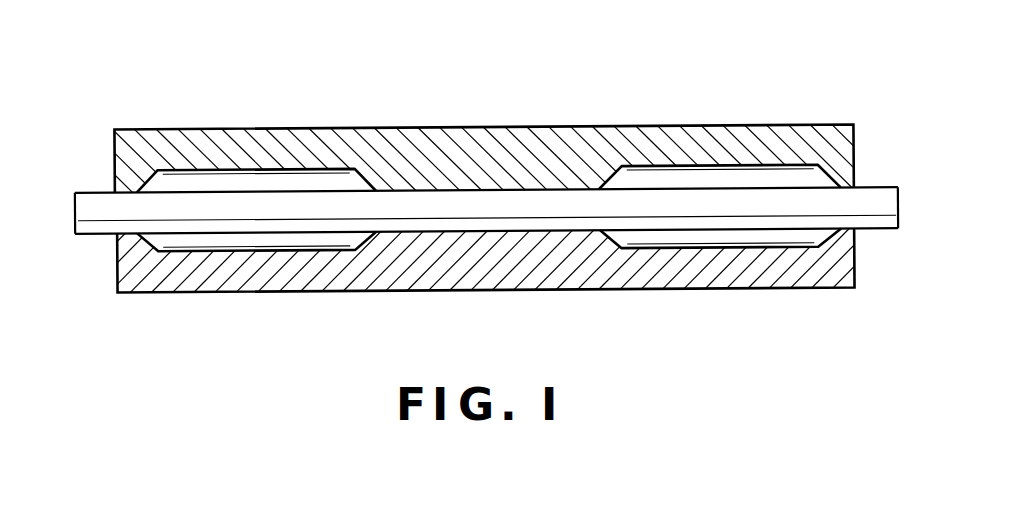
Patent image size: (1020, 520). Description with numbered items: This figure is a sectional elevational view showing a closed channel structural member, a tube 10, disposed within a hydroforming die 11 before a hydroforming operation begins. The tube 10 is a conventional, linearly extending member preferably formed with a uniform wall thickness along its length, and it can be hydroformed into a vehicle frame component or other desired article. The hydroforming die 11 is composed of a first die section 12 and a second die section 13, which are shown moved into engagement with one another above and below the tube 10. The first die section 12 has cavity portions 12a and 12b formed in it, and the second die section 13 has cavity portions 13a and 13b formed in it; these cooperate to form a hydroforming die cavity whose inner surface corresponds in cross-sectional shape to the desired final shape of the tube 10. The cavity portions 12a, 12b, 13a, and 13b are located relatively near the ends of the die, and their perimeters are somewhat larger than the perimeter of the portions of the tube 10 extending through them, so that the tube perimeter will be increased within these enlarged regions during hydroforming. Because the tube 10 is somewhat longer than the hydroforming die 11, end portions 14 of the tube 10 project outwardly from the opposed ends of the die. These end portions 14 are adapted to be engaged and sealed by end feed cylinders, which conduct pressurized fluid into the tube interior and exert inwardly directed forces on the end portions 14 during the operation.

The tube 10 is at (530, 205).
The hydroforming die 11 is at (135, 103).
The first die section 12 is at (214, 146).
The cavity portion 12a is at (273, 170).
The cavity portion 12b is at (733, 169).
The second die section 13 is at (214, 283).
The cavity portion 13a is at (281, 252).
The cavity portion 13b is at (716, 250).
The end portions 14 is at (92, 197).